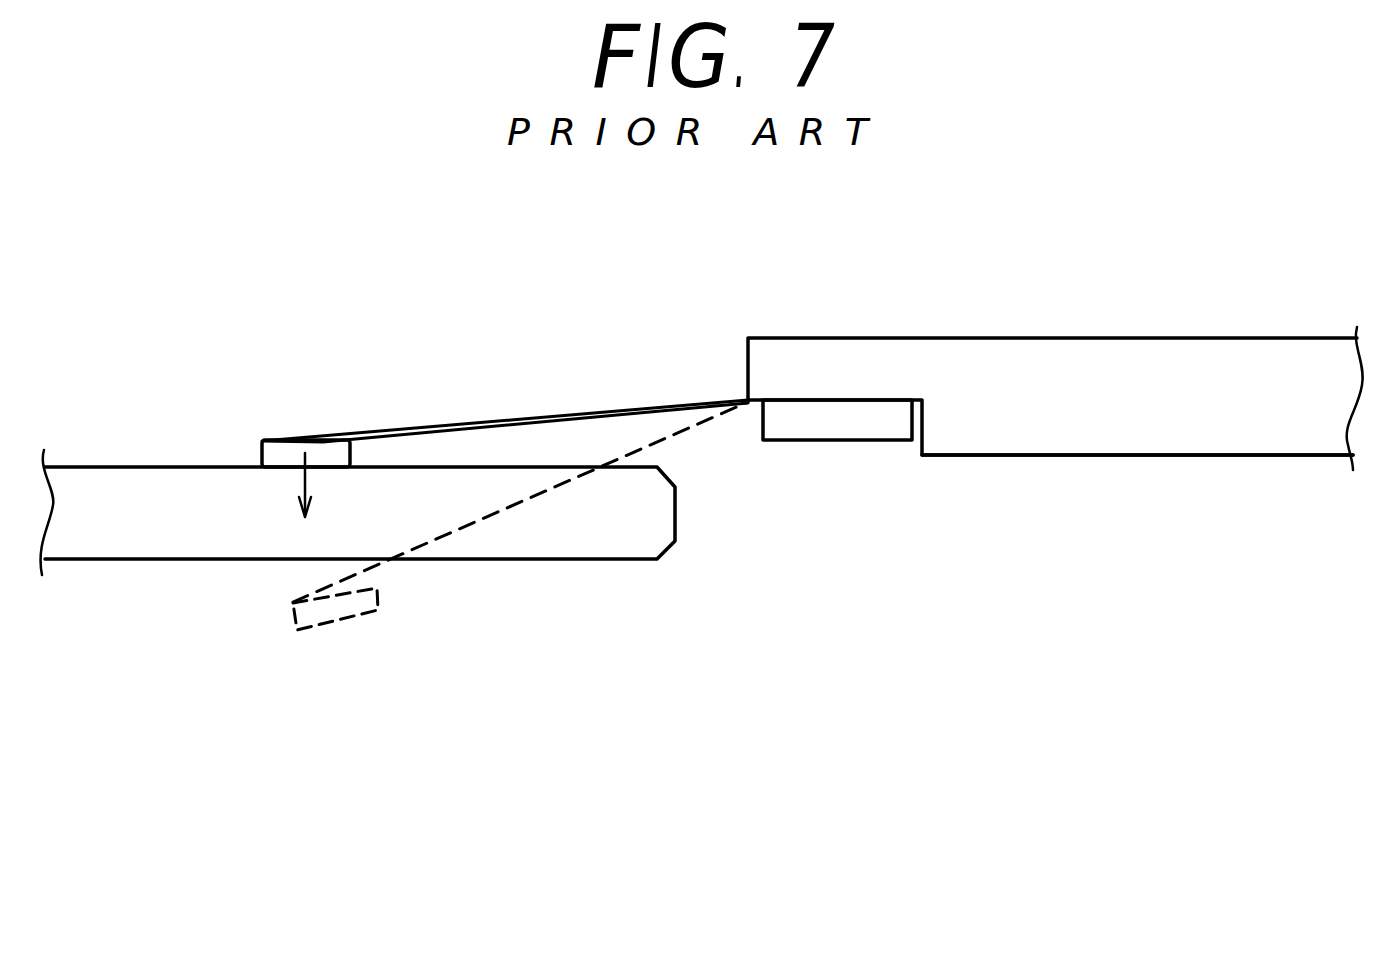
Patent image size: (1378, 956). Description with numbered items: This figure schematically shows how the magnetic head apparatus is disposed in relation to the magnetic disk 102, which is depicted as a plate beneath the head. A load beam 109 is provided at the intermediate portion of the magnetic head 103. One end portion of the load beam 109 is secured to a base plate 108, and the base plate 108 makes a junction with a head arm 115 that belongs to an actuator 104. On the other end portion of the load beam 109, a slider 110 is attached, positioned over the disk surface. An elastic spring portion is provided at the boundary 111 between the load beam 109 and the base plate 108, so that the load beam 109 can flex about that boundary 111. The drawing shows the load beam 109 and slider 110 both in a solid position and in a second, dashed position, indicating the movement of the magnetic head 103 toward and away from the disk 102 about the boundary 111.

The substrate / lower plate 102 is at (163, 492).
The magnetic head 103 is at (527, 388).
The actuator 104 is at (1088, 317).
The base plate 108 is at (839, 418).
The load beam 109 is at (508, 497).
The slider 110 is at (285, 458).
The boundary 111 is at (748, 569).
The head arm 115 is at (1126, 425).